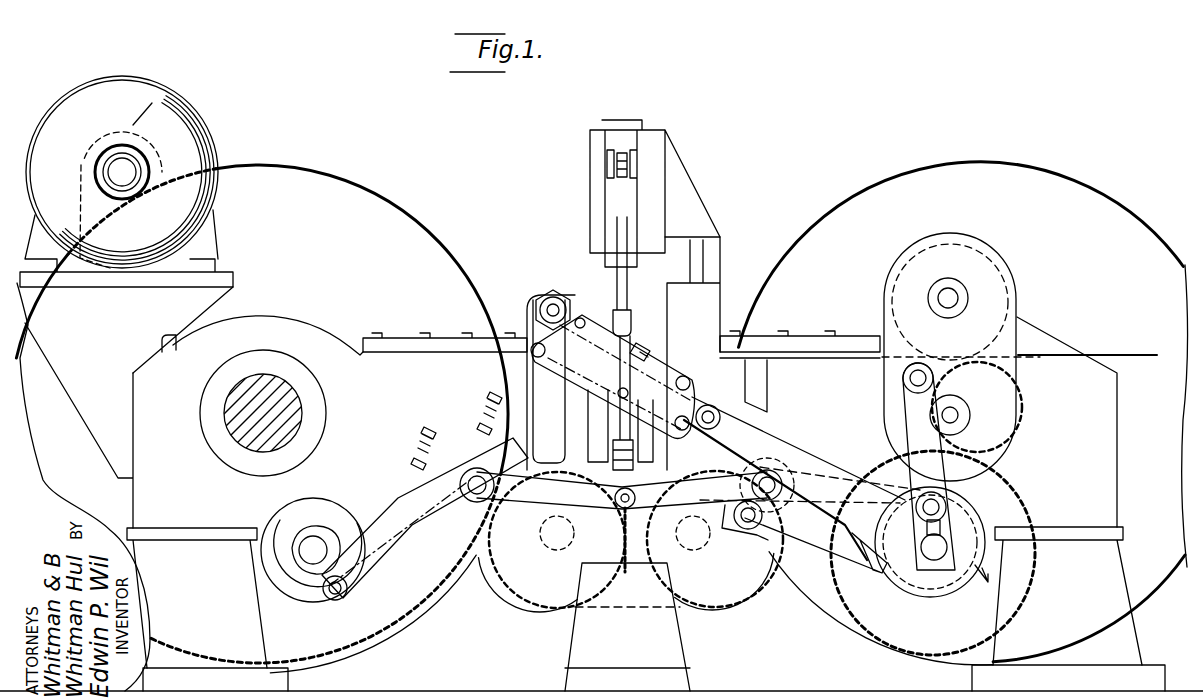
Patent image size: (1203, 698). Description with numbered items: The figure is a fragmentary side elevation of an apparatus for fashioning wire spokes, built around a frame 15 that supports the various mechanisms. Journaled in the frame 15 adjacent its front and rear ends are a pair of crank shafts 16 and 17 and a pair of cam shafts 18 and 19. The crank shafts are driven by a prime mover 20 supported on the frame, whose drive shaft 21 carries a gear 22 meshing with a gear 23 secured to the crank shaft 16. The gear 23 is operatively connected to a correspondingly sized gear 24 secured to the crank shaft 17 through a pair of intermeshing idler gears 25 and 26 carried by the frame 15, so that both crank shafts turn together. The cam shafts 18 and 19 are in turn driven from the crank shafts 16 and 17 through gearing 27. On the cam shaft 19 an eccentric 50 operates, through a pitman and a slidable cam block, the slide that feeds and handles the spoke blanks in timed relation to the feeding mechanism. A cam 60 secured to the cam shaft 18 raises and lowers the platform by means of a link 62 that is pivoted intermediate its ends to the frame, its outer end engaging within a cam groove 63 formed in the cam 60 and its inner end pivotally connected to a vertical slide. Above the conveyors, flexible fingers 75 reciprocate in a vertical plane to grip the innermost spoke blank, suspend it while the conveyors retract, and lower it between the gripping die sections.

The frame 15 is at (430, 360).
The crank shaft 16 is at (285, 390).
The crank shaft 17 is at (1040, 348).
The cam shaft 18 is at (313, 556).
The cam shaft 19 is at (930, 558).
The prime mover 20 is at (200, 128).
The drive shaft 21 is at (137, 170).
The gear 22 is at (168, 95).
The gear 23 is at (301, 166).
The gear 24 is at (868, 205).
The idler gear 25 is at (547, 610).
The idler gear 26 is at (718, 607).
The gearing 27 is at (1012, 478).
The eccentric 50 is at (887, 573).
The cam 60 is at (322, 592).
The link 62 is at (427, 523).
The cam groove 63 is at (335, 530).
The flexible fingers 75 is at (617, 297).